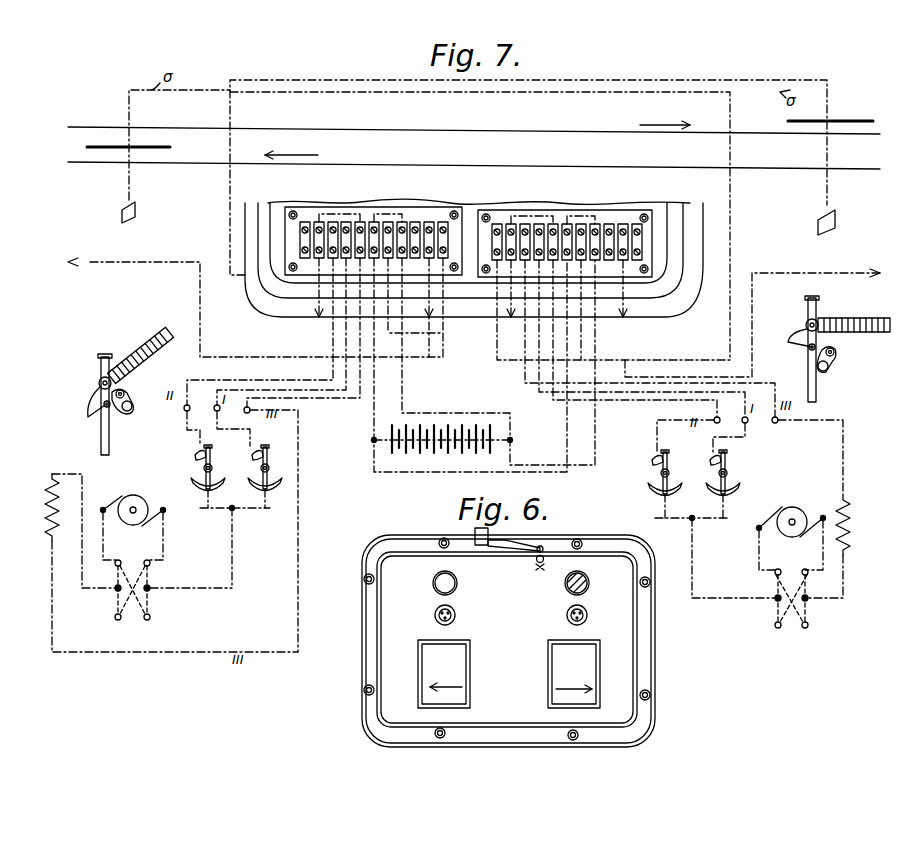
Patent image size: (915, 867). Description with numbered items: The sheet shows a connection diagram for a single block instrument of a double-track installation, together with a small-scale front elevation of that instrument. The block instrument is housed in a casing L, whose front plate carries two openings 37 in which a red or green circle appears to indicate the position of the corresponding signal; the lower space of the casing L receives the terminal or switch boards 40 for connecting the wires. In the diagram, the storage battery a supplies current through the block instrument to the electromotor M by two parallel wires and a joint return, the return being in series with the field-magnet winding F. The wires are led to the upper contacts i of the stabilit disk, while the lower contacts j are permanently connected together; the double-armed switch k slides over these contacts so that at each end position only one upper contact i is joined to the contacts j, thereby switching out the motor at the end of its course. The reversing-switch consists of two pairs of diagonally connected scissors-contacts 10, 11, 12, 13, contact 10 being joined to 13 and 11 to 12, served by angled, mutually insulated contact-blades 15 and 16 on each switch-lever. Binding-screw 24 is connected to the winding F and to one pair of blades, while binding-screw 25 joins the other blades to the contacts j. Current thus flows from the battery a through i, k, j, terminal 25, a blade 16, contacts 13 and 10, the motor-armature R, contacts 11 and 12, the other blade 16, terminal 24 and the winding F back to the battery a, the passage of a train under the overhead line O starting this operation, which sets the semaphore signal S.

In FIG. 7, the terminal or switch board 40 is at (293, 232).
In FIG. 6, the opening 37 is at (458, 583).
In FIG. 7, the scissors-contact 10 is at (466, 559).
In FIG. 7, the scissors-contact 11 is at (463, 559).
In FIG. 7, the scissors-contact 12 is at (463, 629).
In FIG. 7, the scissors-contact 13 is at (462, 632).
In FIG. 7, the contact-blade 15 is at (114, 575).
In FIG. 7, the contact-blade 16 is at (803, 614).
In FIG. 7, the binding-screw 24 is at (115, 591).
In FIG. 7, the binding-screw 25 is at (151, 591).
In FIG. 7, the overhead line O is at (92, 149).
In FIG. 7, the casing L is at (494, 204).
In FIG. 6, the casing L is at (666, 657).
In FIG. 7, the semaphore signal S is at (489, 375).
In FIG. 7, the electromotor M is at (463, 500).
In FIG. 7, the motor-armature R is at (144, 504).
In FIG. 7, the field-magnet winding F is at (444, 514).
In FIG. 7, the storage battery a is at (441, 458).
In FIG. 7, the upper contact i is at (197, 452).
In FIG. 7, the double-armed switch k is at (206, 468).
In FIG. 7, the lower contact j is at (200, 492).